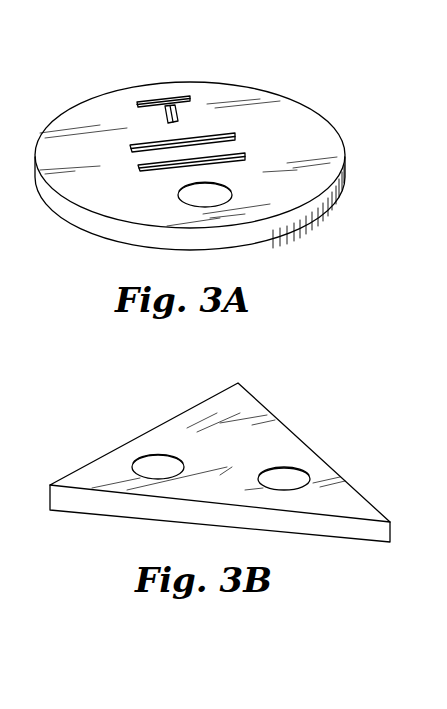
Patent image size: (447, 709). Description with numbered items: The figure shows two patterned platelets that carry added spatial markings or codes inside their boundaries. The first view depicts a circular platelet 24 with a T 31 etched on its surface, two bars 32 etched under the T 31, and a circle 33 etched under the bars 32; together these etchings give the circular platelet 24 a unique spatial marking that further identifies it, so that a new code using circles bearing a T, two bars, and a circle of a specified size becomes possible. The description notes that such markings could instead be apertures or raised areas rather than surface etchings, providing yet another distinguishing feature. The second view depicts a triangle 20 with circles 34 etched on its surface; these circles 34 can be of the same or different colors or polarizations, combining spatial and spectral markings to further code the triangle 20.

In FIG. 3B, the triangle 20 is at (330, 538).
In FIG. 3A, the circular platelet 24 is at (270, 238).
In FIG. 3A, the T 31 is at (181, 97).
In FIG. 3A, the bars 32 is at (223, 133).
In FIG. 3A, the circle 33 is at (203, 193).
In FIG. 3B, the circles 34 is at (160, 465).